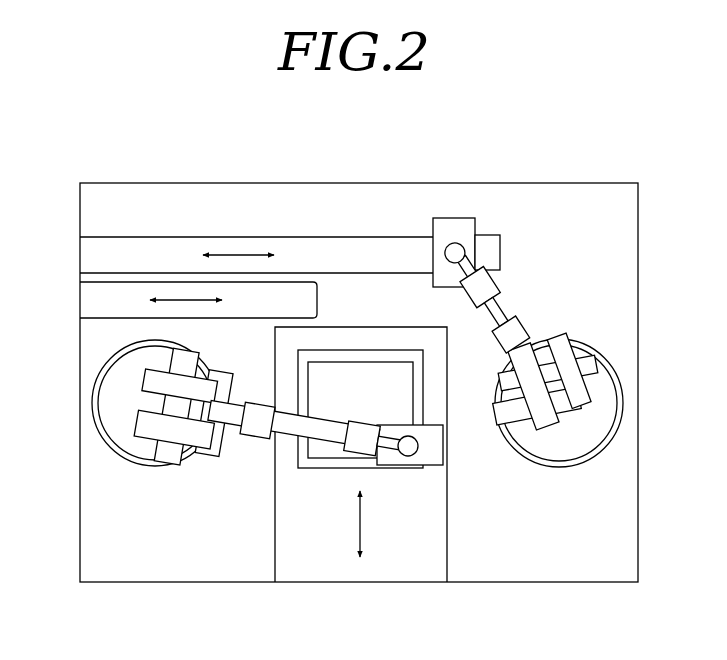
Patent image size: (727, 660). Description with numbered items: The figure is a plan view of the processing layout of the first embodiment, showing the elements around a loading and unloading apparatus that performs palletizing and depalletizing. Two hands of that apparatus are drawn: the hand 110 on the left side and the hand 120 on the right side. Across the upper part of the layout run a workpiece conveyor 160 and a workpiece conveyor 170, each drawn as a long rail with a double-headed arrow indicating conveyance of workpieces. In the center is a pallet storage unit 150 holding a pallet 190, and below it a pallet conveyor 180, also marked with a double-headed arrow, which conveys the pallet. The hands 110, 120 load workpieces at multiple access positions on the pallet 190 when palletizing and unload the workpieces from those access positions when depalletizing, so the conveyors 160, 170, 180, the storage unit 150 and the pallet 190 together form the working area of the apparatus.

The hand 110 is at (100, 372).
The hand 120 is at (620, 388).
The pallet storage unit 150 is at (397, 351).
The workpiece conveyor 160 is at (170, 282).
The workpiece conveyor 170 is at (248, 237).
The pallet conveyor 180 is at (423, 567).
The pallet 190 is at (340, 366).